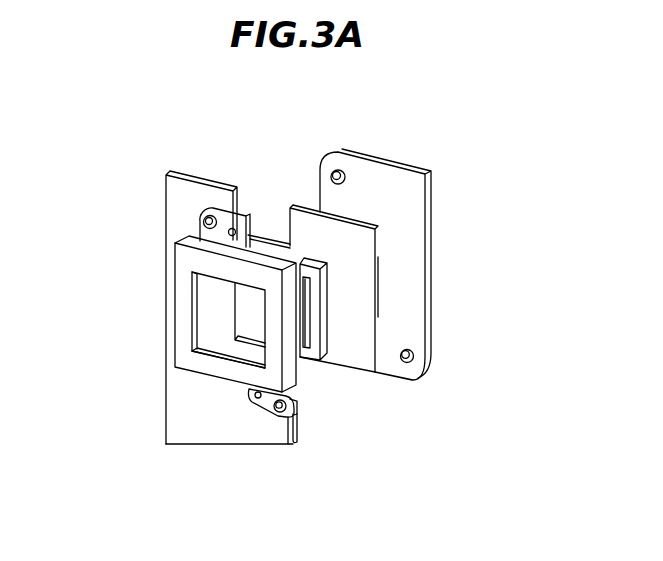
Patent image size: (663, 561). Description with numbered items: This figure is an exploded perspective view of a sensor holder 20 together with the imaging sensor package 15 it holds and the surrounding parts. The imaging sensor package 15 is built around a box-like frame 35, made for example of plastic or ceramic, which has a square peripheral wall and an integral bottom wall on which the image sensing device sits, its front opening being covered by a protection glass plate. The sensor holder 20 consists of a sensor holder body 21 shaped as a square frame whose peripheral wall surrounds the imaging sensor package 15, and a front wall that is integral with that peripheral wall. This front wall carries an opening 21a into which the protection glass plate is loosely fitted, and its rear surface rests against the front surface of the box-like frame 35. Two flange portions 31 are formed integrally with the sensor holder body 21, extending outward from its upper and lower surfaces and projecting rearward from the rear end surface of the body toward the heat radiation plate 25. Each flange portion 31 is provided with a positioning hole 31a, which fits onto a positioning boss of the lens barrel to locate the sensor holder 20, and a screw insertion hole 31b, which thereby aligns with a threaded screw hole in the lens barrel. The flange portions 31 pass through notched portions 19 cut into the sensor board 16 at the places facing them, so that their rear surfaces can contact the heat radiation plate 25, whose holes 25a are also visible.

The imaging sensor package 15 is at (316, 366).
The sensor board 16 is at (180, 383).
The notched portion 19 is at (287, 228).
The sensor holder 20 is at (170, 273).
The sensor holder body 21 is at (181, 258).
The opening 21a is at (201, 334).
The heat radiation plate 25 is at (410, 168).
The mounting hole 25a is at (343, 171).
The flange portion 31 is at (225, 211).
The positioning hole 31a is at (234, 227).
The screw insertion hole 31b is at (206, 214).
The box-like frame 35 is at (325, 305).